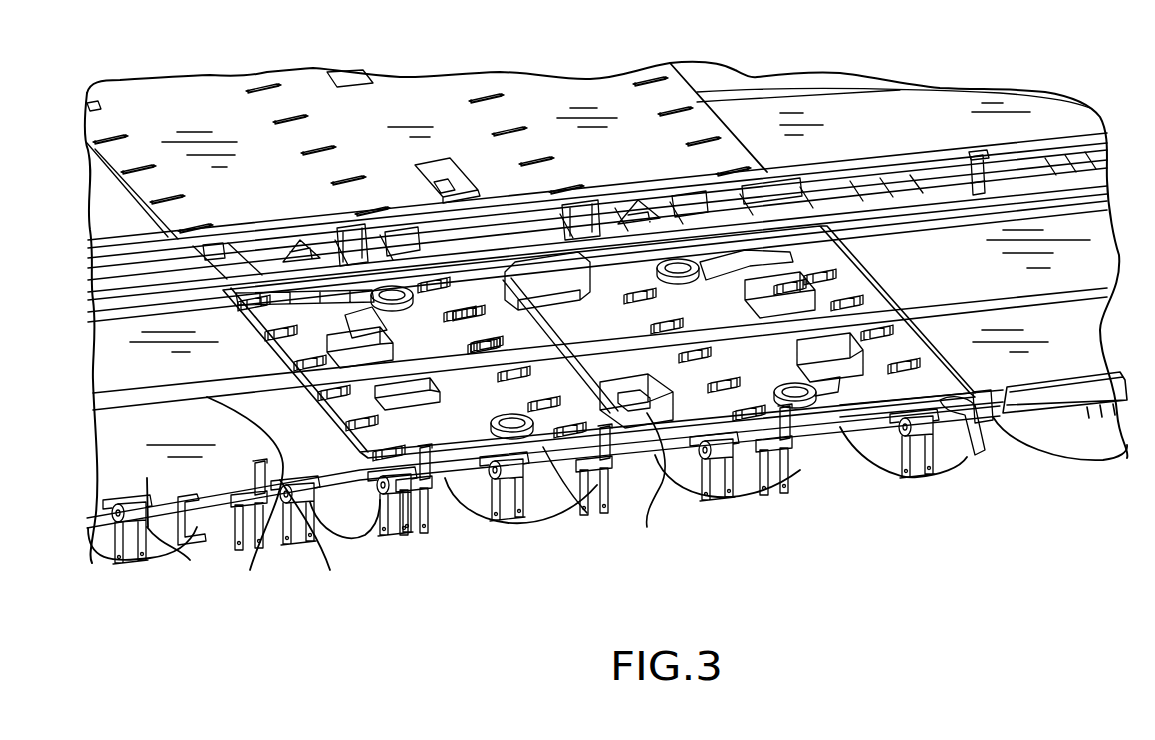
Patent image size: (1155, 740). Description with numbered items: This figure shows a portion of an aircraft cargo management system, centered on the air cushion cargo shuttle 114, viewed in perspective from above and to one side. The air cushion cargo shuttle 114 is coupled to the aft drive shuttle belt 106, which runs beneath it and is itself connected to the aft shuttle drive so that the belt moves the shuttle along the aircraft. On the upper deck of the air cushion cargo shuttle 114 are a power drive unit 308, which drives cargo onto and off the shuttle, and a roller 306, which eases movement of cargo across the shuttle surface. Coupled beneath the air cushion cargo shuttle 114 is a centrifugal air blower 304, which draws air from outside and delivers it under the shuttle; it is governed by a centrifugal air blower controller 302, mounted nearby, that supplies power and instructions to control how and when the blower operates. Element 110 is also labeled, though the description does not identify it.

The aft drive shuttle belt 106 is at (280, 523).
The channel bracket 110 is at (177, 548).
The air cushion cargo shuttle 114 is at (414, 398).
The centrifugal air blower controller 302 is at (512, 432).
The centrifugal air blower 304 is at (603, 428).
The roller 306 is at (635, 450).
The power drive unit 308 is at (738, 440).